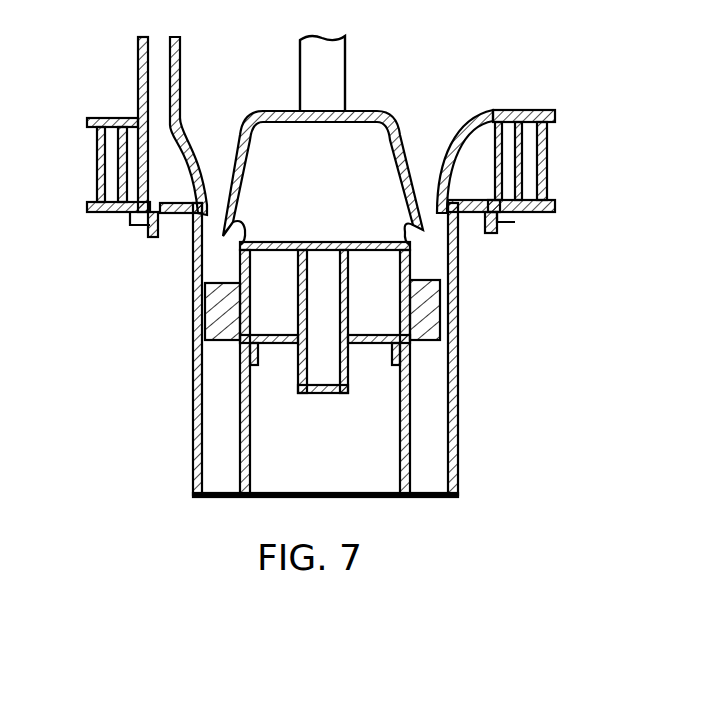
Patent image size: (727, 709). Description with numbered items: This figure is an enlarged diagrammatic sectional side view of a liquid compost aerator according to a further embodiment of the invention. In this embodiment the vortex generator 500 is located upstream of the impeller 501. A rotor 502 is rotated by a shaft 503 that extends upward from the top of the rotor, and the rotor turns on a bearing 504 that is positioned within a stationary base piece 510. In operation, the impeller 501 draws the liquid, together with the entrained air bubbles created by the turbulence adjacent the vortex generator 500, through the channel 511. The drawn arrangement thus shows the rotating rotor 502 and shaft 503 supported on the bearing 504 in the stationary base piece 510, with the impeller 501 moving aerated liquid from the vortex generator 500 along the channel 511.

The vortex generator 500 is at (418, 152).
The impeller 501 is at (423, 317).
The rotor 502 is at (257, 121).
The shaft 503 is at (347, 53).
The bearing 504 is at (353, 362).
The stationary base piece 510 is at (412, 437).
The channel 511 is at (222, 423).